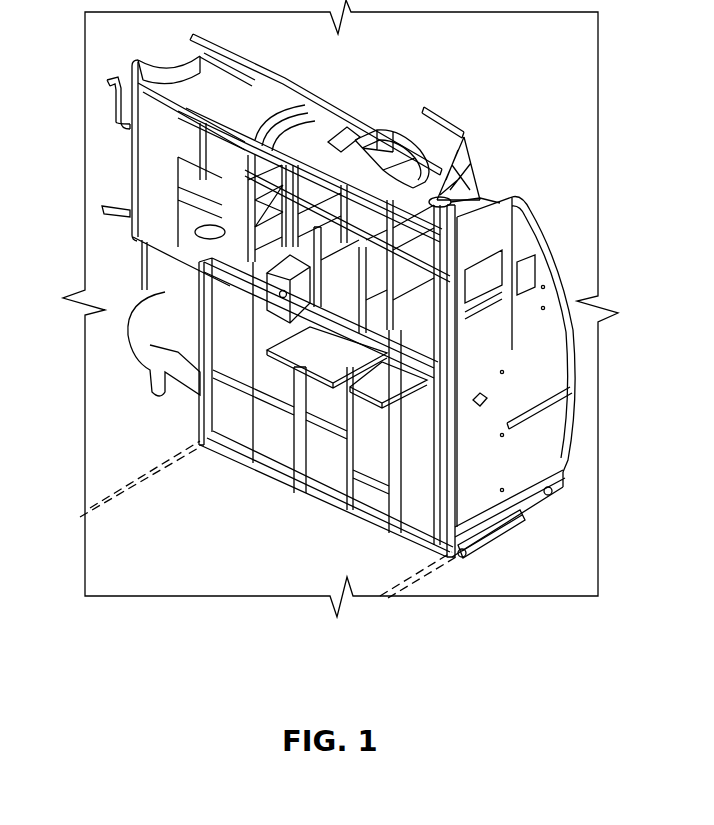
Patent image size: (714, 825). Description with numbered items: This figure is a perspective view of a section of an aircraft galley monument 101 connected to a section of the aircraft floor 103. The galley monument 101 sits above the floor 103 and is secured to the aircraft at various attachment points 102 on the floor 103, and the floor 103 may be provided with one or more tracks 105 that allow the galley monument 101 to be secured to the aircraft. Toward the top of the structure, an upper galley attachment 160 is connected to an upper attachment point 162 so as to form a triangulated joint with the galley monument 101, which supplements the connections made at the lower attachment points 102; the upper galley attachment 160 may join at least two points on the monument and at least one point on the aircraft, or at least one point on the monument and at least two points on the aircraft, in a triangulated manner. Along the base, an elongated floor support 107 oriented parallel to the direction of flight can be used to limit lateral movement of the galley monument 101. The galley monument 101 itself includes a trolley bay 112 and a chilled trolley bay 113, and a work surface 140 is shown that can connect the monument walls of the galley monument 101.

The galley monument 101 is at (432, 91).
The attachment points 102 is at (464, 560).
The floor 103 is at (237, 553).
The tracks 105 is at (95, 500).
The elongated floor support 107 is at (497, 547).
The trolley bay 112 is at (227, 452).
The chilled trolley bay 113 is at (410, 535).
The work surface 140 is at (228, 246).
The upper galley attachment 160 is at (465, 143).
The upper attachment point 162 is at (483, 196).